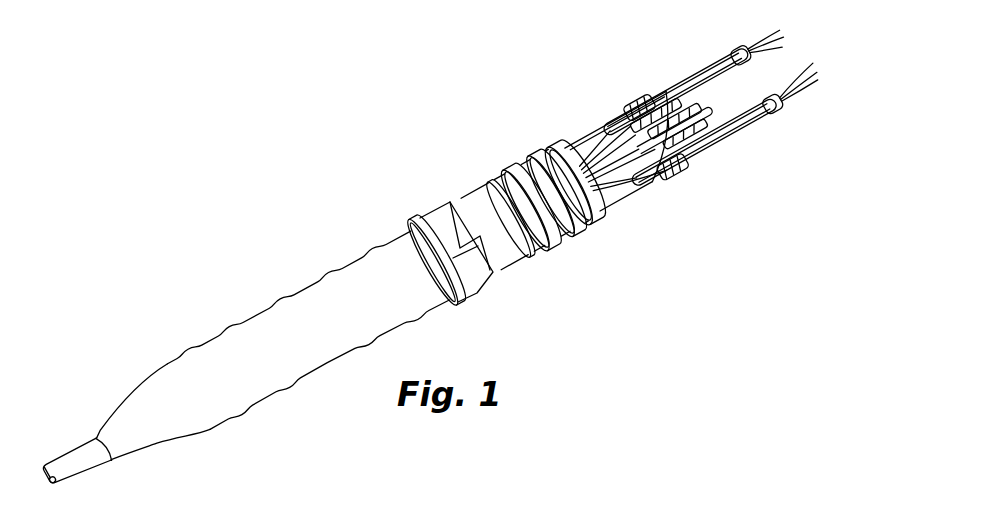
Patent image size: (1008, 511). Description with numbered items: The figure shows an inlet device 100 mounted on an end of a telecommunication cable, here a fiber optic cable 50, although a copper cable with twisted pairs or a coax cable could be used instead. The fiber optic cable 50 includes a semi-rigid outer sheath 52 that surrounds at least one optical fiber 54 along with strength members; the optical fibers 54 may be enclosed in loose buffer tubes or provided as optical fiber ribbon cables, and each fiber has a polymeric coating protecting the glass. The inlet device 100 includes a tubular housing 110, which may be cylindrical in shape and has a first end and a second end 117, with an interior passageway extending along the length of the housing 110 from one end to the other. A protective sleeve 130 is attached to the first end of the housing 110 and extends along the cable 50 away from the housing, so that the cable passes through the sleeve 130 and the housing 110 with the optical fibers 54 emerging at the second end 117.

The inlet device 100 is at (316, 186).
The fiber optic cable 50 is at (60, 448).
The semi-rigid outer sheath 52 is at (78, 465).
The protective sleeve 130 is at (238, 342).
The tubular housing 110 is at (477, 212).
The second end 117 is at (597, 137).
The optical fiber 54 is at (710, 70).